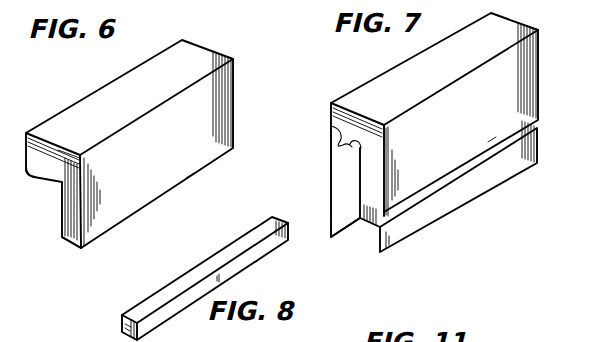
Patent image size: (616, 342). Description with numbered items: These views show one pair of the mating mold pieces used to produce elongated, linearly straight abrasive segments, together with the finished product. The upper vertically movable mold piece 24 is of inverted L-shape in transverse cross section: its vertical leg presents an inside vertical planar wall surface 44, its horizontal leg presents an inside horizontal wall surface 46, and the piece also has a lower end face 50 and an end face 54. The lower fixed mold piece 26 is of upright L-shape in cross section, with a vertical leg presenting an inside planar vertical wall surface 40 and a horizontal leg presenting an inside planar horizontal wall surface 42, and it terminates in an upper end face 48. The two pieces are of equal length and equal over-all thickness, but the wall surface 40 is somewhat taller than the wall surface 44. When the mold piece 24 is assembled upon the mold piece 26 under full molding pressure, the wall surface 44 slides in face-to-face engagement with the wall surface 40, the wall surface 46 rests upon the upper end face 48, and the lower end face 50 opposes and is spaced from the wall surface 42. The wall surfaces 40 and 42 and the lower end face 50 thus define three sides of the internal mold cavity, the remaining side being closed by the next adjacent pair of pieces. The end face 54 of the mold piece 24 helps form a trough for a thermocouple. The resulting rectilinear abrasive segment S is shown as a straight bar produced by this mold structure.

In FIG. 6, the upper vertically movable mold piece 24 is at (142, 166).
In FIG. 7, the upper vertically movable mold piece 24 is at (461, 123).
In FIG. 7, the lower fixed mold piece 26 is at (356, 210).
In FIG. 7, the inside planar vertical wall surface 40 is at (358, 218).
In FIG. 7, the inside planar horizontal wall surface 42 is at (443, 193).
In FIG. 6, the inside vertical planar wall surface 44 is at (62, 236).
In FIG. 6, the inside horizontal wall surface 46 is at (42, 178).
In FIG. 7, the inside horizontal wall surface 46 is at (332, 126).
In FIG. 7, the upper end face 48 is at (350, 144).
In FIG. 6, the lower end face 50 is at (191, 174).
In FIG. 7, the lower end face 50 is at (492, 138).
In FIG. 6, the end face 54 is at (77, 141).
In FIG. 8, the linearly straight abrasive segment S is at (223, 253).